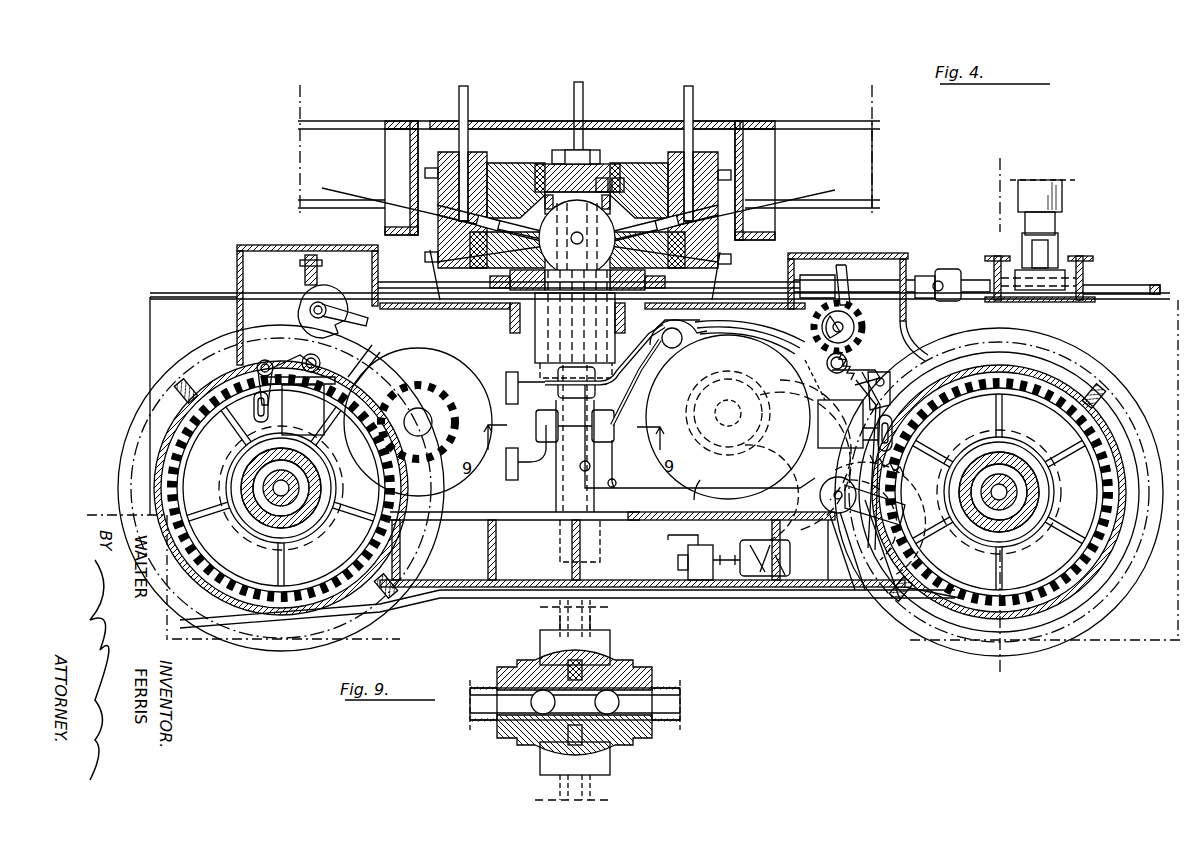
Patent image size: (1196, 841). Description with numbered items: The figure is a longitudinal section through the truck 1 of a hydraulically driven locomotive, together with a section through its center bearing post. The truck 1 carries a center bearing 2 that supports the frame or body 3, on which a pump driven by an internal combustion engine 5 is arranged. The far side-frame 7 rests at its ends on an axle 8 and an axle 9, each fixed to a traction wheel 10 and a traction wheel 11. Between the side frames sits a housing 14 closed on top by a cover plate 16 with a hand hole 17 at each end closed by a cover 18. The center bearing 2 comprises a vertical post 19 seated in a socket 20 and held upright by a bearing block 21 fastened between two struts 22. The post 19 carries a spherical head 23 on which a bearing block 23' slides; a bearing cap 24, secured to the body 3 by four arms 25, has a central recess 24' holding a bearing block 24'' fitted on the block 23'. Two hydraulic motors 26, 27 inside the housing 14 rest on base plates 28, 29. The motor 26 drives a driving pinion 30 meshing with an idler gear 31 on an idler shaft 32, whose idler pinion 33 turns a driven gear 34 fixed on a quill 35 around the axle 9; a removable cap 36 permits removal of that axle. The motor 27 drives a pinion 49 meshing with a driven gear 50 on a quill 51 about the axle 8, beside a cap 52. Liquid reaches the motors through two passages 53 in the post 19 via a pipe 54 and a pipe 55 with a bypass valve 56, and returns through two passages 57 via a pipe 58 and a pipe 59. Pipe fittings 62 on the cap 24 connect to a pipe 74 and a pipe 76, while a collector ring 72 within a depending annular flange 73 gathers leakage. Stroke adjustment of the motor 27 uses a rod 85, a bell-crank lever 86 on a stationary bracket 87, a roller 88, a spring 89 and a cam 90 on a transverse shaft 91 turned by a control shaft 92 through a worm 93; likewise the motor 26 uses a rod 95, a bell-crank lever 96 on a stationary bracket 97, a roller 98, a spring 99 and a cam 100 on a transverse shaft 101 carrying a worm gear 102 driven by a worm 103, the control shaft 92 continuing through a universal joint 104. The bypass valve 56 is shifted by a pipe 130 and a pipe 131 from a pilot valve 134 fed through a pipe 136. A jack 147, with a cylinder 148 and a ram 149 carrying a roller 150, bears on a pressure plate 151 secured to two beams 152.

In FIG. 4, the truck 1 is at (80, 315).
In FIG. 4, the center bearing 2 is at (528, 152).
In FIG. 4, the frame or body 3 is at (856, 160).
In FIG. 4, the internal combustion engine 5 is at (988, 162).
In FIG. 4, the far side-frame 7 is at (153, 296).
In FIG. 4, the axle 8 is at (281, 488).
In FIG. 4, the axle 9 is at (999, 492).
In FIG. 4, the traction wheel 10 is at (359, 110).
In FIG. 4, the traction wheel 11 is at (329, 186).
In FIG. 4, the housing 14 is at (456, 588).
In FIG. 4, the cover plate 16 is at (472, 312).
In FIG. 4, the hand hole 17 is at (265, 272).
In FIG. 4, the cover 18 is at (246, 250).
In FIG. 4, the vertical post 19 is at (568, 490).
In FIG. 9, the vertical post 19 is at (636, 680).
In FIG. 4, the socket 20 is at (560, 562).
In FIG. 4, the bearing block 21 is at (550, 326).
In FIG. 4, the strut 22 is at (554, 345).
In FIG. 4, the spherical head 23 is at (575, 170).
In FIG. 4, the bearing block 23' is at (577, 178).
In FIG. 4, the bearing cap 24 is at (640, 162).
In FIG. 4, the central recess 24' is at (618, 162).
In FIG. 4, the bearing block 24'' is at (600, 128).
In FIG. 4, the arm 25 is at (428, 108).
In FIG. 4, the hydraulic motor 26 is at (728, 417).
In FIG. 4, the hydraulic motor 27 is at (418, 422).
In FIG. 4, the base plate 28 is at (680, 514).
In FIG. 4, the base plate 29 is at (456, 520).
In FIG. 4, the driving pinion 30 is at (728, 413).
In FIG. 4, the idler gear 31 is at (805, 455).
In FIG. 4, the idler shaft 32 is at (862, 533).
In FIG. 4, the idler pinion 33 is at (771, 492).
In FIG. 4, the driven gear 34 is at (1056, 576).
In FIG. 4, the driving tube or quill 35 is at (1040, 490).
In FIG. 4, the removable cap 36 is at (1100, 572).
In FIG. 4, the pinion 49 is at (447, 460).
In FIG. 4, the driven gear 50 is at (260, 568).
In FIG. 4, the driving quill 51 is at (242, 487).
In FIG. 4, the cap 52 is at (137, 460).
In FIG. 4, the passage 53 is at (562, 356).
In FIG. 9, the passage 53 is at (542, 688).
In FIG. 4, the pipe 54 is at (512, 427).
In FIG. 9, the pipe 54 is at (480, 724).
In FIG. 4, the pipe 55 is at (636, 414).
In FIG. 9, the pipe 55 is at (680, 722).
In FIG. 4, the bypass valve 56 is at (680, 347).
In FIG. 9, the passage 57 is at (602, 665).
In FIG. 4, the pipe 58 is at (512, 385).
In FIG. 9, the pipe 58 is at (592, 800).
In FIG. 4, the pipe 59 is at (618, 372).
In FIG. 4, the pipe fitting 62 is at (470, 252).
In FIG. 4, the collector ring 72 is at (658, 291).
In FIG. 4, the depending annular flange 73 is at (505, 274).
In FIG. 4, the pipe 74 is at (463, 89).
In FIG. 4, the pipe 76 is at (580, 86).
In FIG. 4, the rod 85 is at (275, 410).
In FIG. 4, the bell-crank lever 86 is at (258, 418).
In FIG. 4, the stationary bracket 87 is at (255, 368).
In FIG. 4, the roller 88 is at (300, 358).
In FIG. 4, the spring 89 is at (328, 378).
In FIG. 4, the cam 90 is at (300, 300).
In FIG. 4, the transverse shaft 91 is at (330, 320).
In FIG. 4, the control shaft 92 is at (407, 278).
In FIG. 4, the worm 93 is at (305, 268).
In FIG. 4, the rod 95 is at (872, 433).
In FIG. 4, the bell-crank lever 96 is at (892, 395).
In FIG. 4, the stationary bracket 97 is at (840, 424).
In FIG. 4, the roller 98 is at (850, 360).
In FIG. 4, the spring 99 is at (838, 398).
In FIG. 4, the cam 100 is at (843, 355).
In FIG. 4, the transverse shaft 101 is at (848, 328).
In FIG. 4, the worm gear 102 is at (856, 314).
In FIG. 4, the worm 103 is at (846, 272).
In FIG. 4, the universal joint 104 is at (950, 275).
In FIG. 4, the pipe 130 is at (740, 342).
In FIG. 4, the pipe 131 is at (740, 340).
In FIG. 4, the pilot valve 134 is at (880, 531).
In FIG. 4, the pipe 136 is at (716, 484).
In FIG. 4, the jack 147 is at (1062, 168).
In FIG. 4, the cylinder 148 is at (1062, 193).
In FIG. 4, the ram 149 is at (1055, 225).
In FIG. 4, the roller 150 is at (1045, 255).
In FIG. 4, the pressure plate 151 is at (1055, 290).
In FIG. 4, the beam 152 is at (992, 256).